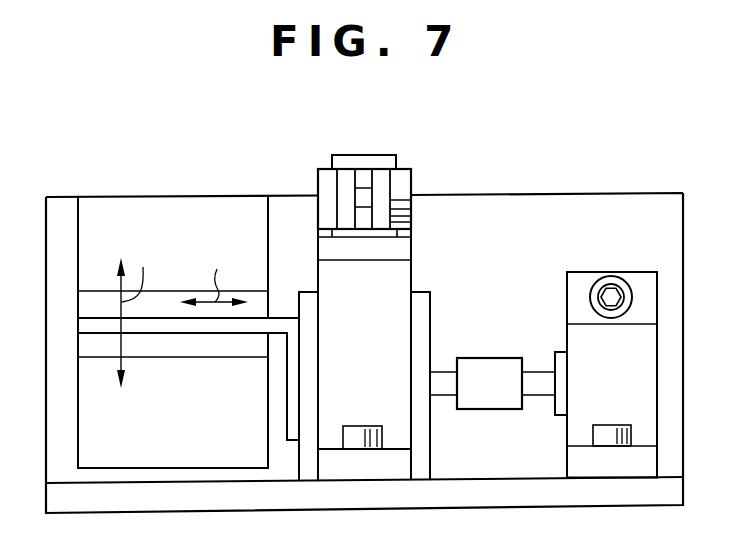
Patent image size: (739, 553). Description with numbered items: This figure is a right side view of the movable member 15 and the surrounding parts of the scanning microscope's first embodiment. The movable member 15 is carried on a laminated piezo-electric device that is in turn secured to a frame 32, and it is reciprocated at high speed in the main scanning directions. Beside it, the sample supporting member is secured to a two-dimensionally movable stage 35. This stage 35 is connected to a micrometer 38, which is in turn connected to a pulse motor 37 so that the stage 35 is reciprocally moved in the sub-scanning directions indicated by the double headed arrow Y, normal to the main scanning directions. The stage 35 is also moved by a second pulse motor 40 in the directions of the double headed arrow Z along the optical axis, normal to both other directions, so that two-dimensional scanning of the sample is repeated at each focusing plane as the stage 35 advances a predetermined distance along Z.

The movable member 15 is at (247, 217).
The frame 32 is at (628, 227).
The two-dimensionally movable stage 35 is at (199, 327).
The pulse motor 37 is at (557, 350).
The micrometer 38 is at (480, 373).
The pulse motor 40 is at (378, 158).